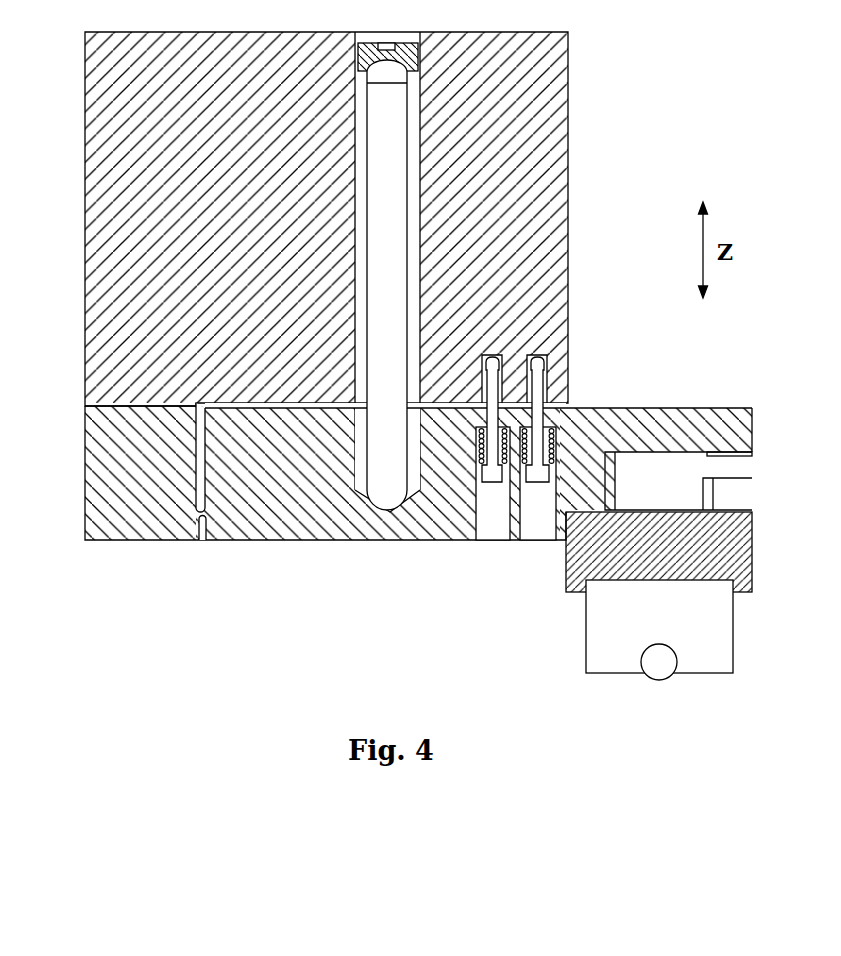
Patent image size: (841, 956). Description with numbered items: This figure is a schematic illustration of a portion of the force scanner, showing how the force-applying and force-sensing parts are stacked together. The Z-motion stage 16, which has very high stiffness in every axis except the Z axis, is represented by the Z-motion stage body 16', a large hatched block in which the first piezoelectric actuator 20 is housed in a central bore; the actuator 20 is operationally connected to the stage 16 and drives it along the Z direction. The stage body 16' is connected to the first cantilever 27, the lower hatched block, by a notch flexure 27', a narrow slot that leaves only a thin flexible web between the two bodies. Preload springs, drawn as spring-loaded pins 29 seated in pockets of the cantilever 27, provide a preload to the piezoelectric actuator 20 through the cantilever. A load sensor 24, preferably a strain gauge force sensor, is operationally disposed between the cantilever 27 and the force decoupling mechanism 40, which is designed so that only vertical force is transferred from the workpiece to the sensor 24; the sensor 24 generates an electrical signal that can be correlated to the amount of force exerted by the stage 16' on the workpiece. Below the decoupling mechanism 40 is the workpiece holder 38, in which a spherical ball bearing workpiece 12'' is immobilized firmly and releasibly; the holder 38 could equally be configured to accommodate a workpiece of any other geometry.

The Z-motion stage 16 is at (747, 63).
The Z-motion stage body 16' is at (375, 261).
The first piezoelectric actuator 20 is at (388, 278).
The load sensor 24 is at (657, 478).
The first cantilever 27 is at (418, 514).
The notch flexure 27' is at (189, 538).
The spring-loaded contact pins 29 is at (522, 463).
The force decoupling mechanism 40 is at (565, 578).
The workpiece holder 38 is at (733, 627).
The ball bearing workpiece 12'' is at (637, 685).